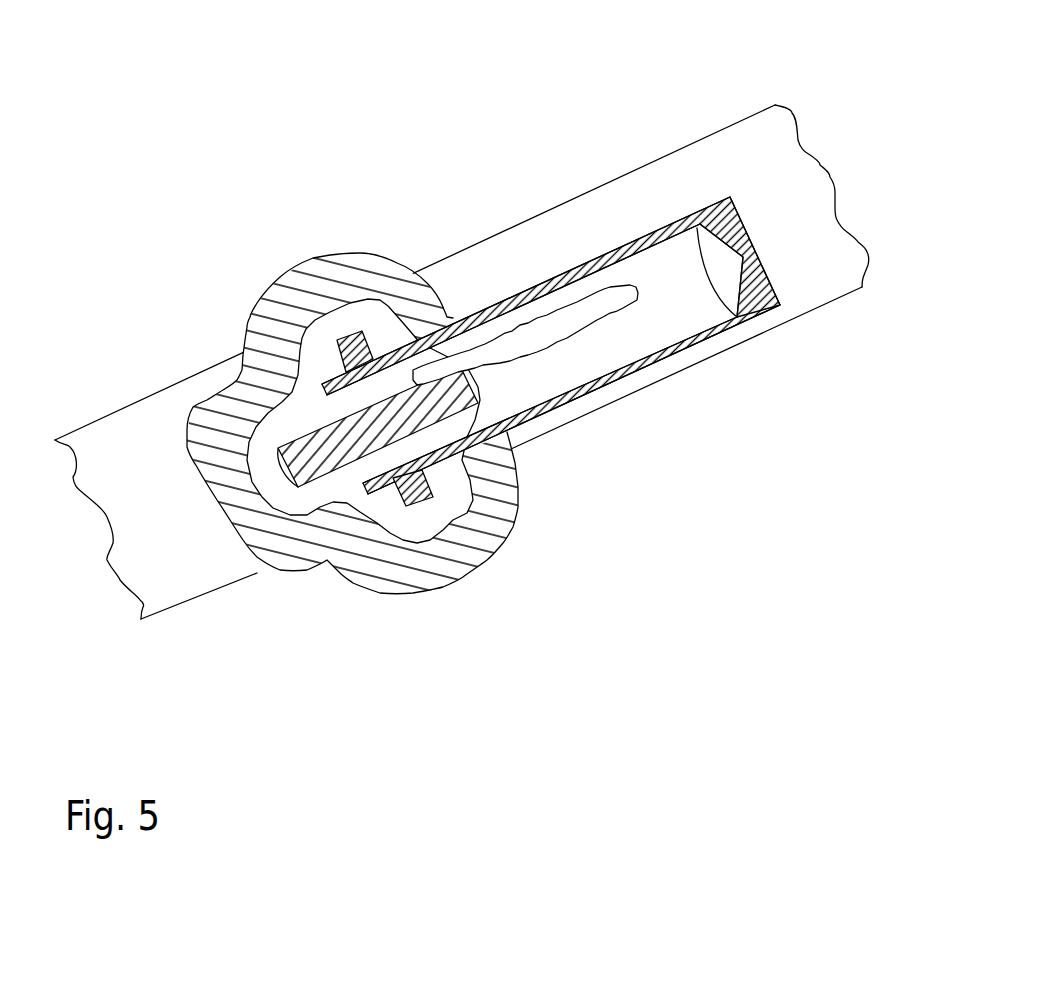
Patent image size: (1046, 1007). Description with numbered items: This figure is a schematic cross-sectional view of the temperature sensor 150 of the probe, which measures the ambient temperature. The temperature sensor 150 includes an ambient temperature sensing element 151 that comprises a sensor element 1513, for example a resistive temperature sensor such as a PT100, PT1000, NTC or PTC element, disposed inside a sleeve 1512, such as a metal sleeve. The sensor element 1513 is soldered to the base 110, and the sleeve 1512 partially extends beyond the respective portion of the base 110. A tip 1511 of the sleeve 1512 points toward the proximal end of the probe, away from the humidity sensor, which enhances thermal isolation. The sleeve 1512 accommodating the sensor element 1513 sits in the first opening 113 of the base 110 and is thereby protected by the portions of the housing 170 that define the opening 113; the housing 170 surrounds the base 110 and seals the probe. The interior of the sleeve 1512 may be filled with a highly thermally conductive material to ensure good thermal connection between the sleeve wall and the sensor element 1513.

The temperature sensor 150 is at (462, 309).
The housing 170 is at (662, 190).
The base 110 is at (308, 447).
The ambient temperature sensing element 151 is at (563, 320).
The first opening 113 is at (576, 260).
The sleeve 1512 is at (687, 352).
The tip 1511 is at (757, 252).
The sensor element 1513 is at (560, 325).